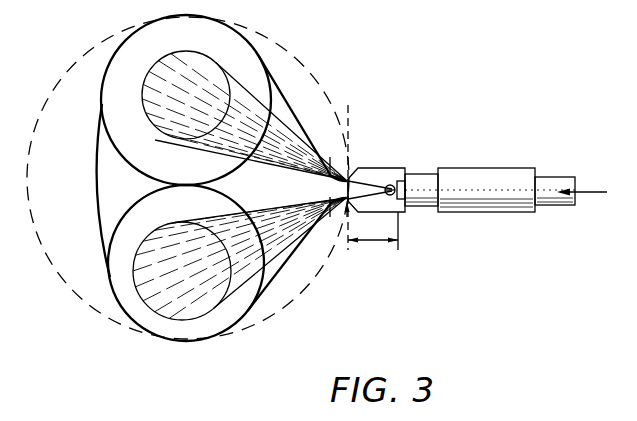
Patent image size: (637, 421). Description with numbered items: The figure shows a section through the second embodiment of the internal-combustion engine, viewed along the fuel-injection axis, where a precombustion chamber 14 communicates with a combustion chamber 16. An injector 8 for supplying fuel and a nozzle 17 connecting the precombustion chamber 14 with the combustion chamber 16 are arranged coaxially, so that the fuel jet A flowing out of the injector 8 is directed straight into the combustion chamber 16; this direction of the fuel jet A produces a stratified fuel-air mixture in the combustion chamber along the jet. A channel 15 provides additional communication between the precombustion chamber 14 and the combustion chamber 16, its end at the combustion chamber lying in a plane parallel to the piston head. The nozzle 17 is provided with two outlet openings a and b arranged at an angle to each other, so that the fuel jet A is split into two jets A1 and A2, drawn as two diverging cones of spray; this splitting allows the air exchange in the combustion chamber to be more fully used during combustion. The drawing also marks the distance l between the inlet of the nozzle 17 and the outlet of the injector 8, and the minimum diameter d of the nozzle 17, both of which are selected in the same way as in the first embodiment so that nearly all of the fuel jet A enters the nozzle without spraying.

The combustion chamber 16 is at (108, 196).
The first split fuel jet A1 is at (190, 112).
The second split fuel jet A2 is at (188, 243).
The nozzle 17 is at (352, 174).
The fuel jet A is at (365, 187).
The precombustion chamber 14 is at (393, 172).
The channel 15 is at (402, 213).
The injector 8 is at (470, 180).
The outlet opening a is at (329, 152).
The outlet opening b is at (325, 224).
The minimum diameter of the nozzle d is at (348, 105).
The distance between nozzle inlet and injector outlet l is at (373, 231).